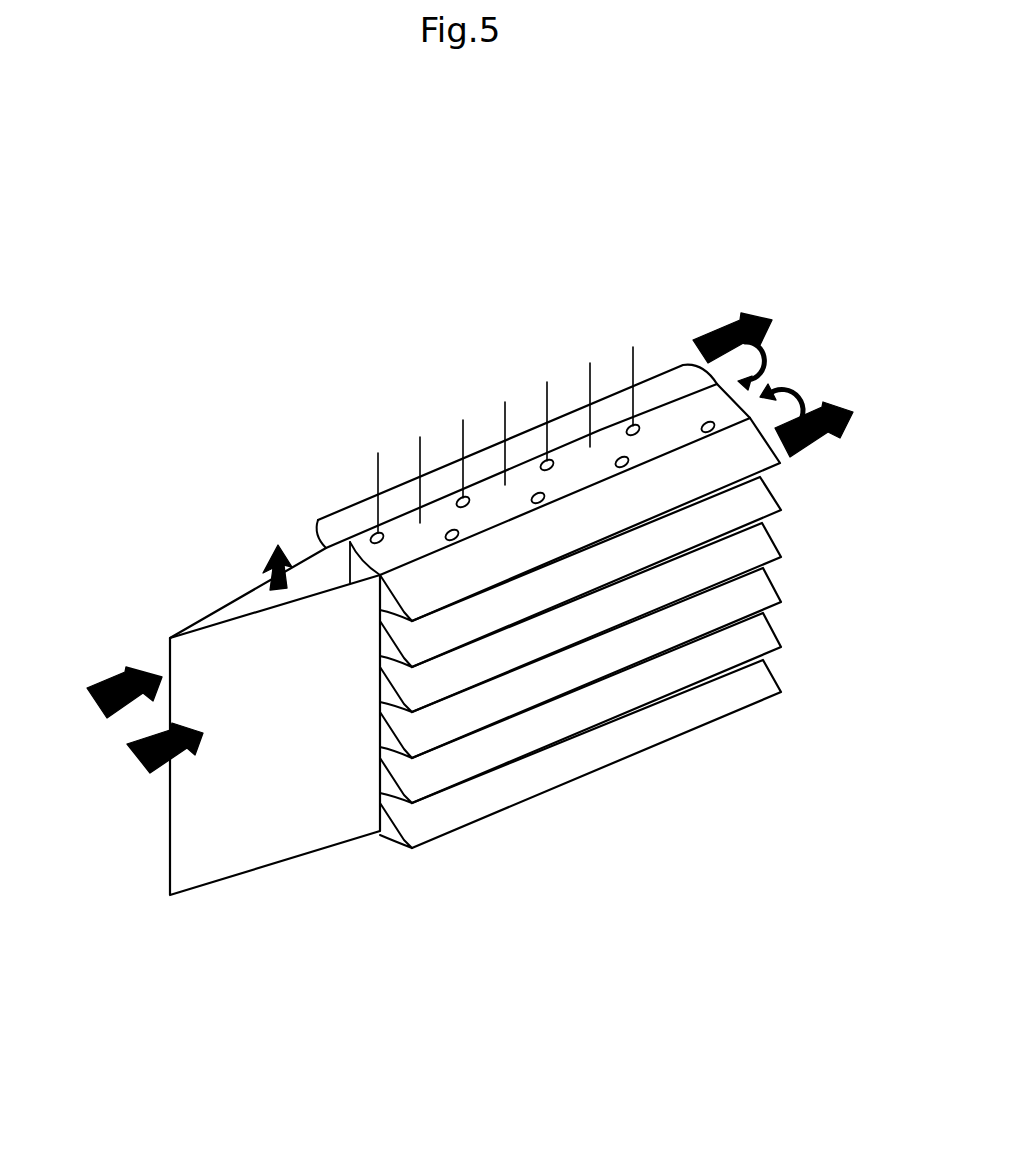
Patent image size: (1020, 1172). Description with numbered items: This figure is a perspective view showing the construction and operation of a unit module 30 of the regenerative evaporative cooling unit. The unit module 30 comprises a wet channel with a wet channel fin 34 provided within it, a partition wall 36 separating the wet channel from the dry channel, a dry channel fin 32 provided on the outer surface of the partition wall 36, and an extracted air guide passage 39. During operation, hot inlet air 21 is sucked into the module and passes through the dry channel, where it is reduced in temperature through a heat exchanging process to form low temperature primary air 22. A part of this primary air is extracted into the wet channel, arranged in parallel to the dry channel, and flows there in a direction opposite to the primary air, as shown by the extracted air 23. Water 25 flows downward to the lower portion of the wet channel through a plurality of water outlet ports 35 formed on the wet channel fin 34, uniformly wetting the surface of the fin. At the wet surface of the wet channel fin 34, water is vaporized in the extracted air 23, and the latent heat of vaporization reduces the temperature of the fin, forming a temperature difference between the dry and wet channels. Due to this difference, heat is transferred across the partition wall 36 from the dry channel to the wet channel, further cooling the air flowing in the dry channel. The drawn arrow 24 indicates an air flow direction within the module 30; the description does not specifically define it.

The hot inlet air 21 is at (142, 762).
The low temperature primary air 22 is at (755, 314).
The extracted air 23 is at (800, 397).
The upward air stream 24 is at (278, 543).
The water 25 is at (462, 468).
The unit module 30 is at (196, 559).
The dry channel fin 32 is at (760, 594).
The wet channel fin 34 is at (530, 462).
The water outlet ports 35 is at (624, 432).
The partition wall 36 is at (687, 441).
The extracted air guide passage 39 is at (272, 836).